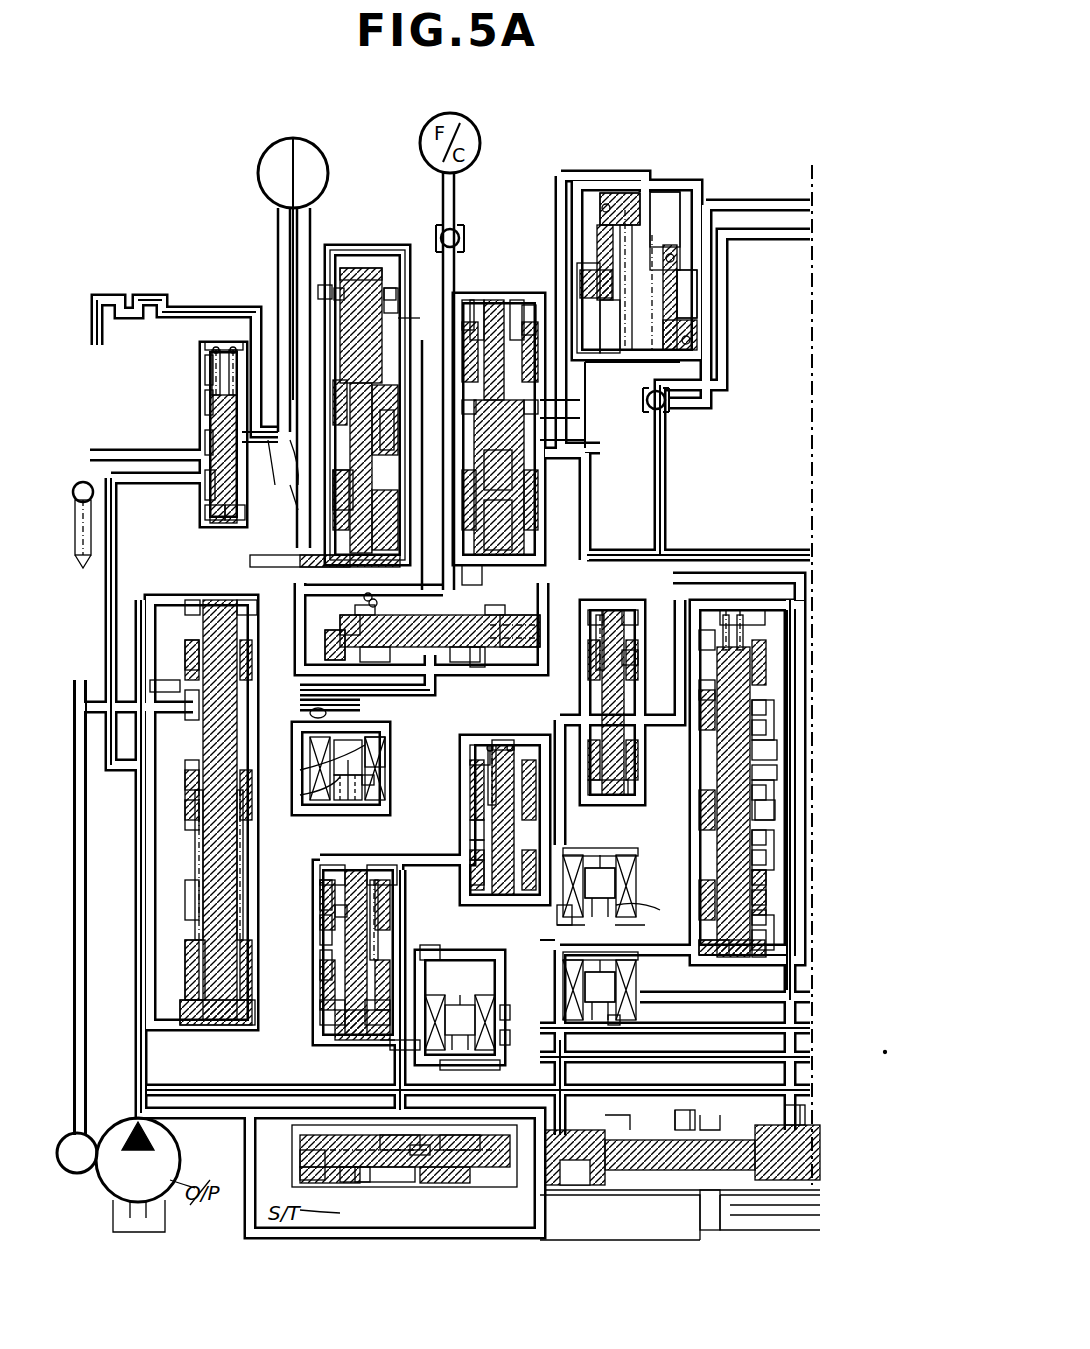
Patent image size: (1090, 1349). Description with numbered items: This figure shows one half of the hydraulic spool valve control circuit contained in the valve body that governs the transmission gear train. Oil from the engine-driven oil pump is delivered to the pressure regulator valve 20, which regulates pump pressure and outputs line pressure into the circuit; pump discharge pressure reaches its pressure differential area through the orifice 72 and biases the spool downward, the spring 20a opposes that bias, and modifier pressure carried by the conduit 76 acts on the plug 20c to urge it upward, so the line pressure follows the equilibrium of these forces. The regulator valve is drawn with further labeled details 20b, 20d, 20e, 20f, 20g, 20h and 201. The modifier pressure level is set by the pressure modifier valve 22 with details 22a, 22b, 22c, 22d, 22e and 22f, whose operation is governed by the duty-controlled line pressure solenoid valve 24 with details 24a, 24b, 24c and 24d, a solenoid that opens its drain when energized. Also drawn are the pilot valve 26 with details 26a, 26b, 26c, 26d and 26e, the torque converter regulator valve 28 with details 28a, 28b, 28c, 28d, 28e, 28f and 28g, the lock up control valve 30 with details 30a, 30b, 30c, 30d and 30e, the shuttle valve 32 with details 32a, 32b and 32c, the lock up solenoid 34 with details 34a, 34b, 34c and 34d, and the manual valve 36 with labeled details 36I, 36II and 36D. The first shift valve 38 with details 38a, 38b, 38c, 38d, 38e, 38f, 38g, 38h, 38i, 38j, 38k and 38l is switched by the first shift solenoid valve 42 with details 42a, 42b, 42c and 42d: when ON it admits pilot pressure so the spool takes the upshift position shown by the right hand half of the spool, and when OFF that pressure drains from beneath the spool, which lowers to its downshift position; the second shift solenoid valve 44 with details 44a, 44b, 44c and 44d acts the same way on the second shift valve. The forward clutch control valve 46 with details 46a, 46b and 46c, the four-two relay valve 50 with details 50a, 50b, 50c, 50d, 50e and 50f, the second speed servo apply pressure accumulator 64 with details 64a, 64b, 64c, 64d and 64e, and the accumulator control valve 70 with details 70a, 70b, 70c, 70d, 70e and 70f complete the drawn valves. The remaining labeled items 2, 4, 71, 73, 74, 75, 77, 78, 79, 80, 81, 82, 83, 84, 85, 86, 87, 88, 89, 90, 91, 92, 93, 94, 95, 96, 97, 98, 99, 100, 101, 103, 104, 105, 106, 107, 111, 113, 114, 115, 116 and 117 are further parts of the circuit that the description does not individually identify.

The engine 2 is at (328, 173).
The manual valve 4 is at (325, 350).
The pressure regulator valve 20 is at (215, 590).
The spring 20a is at (200, 905).
The port 20b is at (185, 600).
The plug 20c is at (185, 945).
The port 20d is at (255, 590).
The port 20e is at (200, 782).
The port 20f is at (185, 695).
The port 20g is at (185, 640).
The port 20h is at (195, 815).
The port 201 is at (320, 960).
The pressure modifier valve 22 is at (340, 1045).
The port 22a is at (382, 864).
The port 22b is at (332, 864).
The port 22c is at (320, 925).
The port 22d is at (330, 1025).
The port 22e is at (320, 888).
The port 22f is at (380, 1025).
The line pressure solenoid valve 24 is at (490, 975).
The port 24a is at (515, 1045).
The port 24b is at (385, 1050).
The port 24c is at (500, 1010).
The port 24d is at (490, 1065).
The pilot valve 26 is at (400, 1190).
The port 26a is at (455, 1135).
The port 26b is at (420, 1145).
The port 26c is at (300, 1170).
The port 26d is at (400, 1135).
The port 26e is at (355, 1183).
The torque converter regulator valve 28 is at (200, 500).
The port 28a is at (210, 342).
The port 28b is at (205, 362).
The port 28c is at (205, 440).
The port 28d is at (205, 485).
The port 28e is at (205, 398).
The port 28f is at (210, 517).
The port 28g is at (245, 517).
The lock up control valve 30 is at (355, 262).
The port 30a is at (258, 560).
The port 30b is at (400, 300).
The port 30c is at (330, 475).
The port 30d is at (320, 560).
The port 30e is at (362, 268).
The shuttle valve 32 is at (480, 600).
The port 32a is at (520, 665).
The port 32b is at (340, 620).
The port 32c is at (325, 638).
The lock up solenoid 34 is at (330, 820).
The port 34a is at (385, 755).
The port 34b is at (345, 805).
The port 34c is at (300, 770).
The port 34d is at (300, 797).
The manual valve 36 is at (665, 1228).
The port 36I is at (675, 1120).
The port 36II is at (705, 1215).
The port 36D is at (795, 1105).
The first shift valve 38 is at (740, 955).
The port 38a is at (738, 608).
The port 38b is at (699, 642).
The port 38c is at (766, 917).
The port 38d is at (699, 690).
The port 38e is at (766, 708).
The port 38f is at (766, 792).
The port 38g is at (766, 857).
The port 38h is at (766, 937).
The port 38i is at (766, 952).
The port 38j is at (790, 660).
The port 38k is at (766, 728).
The port 38l is at (766, 837).
The first shift solenoid valve 42 is at (612, 835).
The port 42a is at (590, 848).
The solenoid 42b is at (598, 879).
The port 42c is at (557, 922).
The port 42d is at (660, 910).
The second shift solenoid valve 44 is at (630, 1030).
The port 44a is at (565, 960).
The solenoid 44b is at (598, 983).
The port 44c is at (780, 1030).
The port 44d is at (620, 1020).
The forward clutch control valve 46 is at (490, 290).
The port 46a is at (500, 525).
The port 46b is at (530, 320).
The port 46c is at (500, 480).
The 4-2 relay valve 50 is at (612, 600).
The port 50a is at (590, 615).
The port 50b is at (638, 615).
The port 50c is at (777, 752).
The port 50d is at (777, 772).
The port 50e is at (600, 795).
The port 50f is at (638, 660).
The second speed servo apply pressure accumulator 64 is at (672, 178).
The piston 64a is at (618, 190).
The chamber 64b is at (622, 336).
The spring 64c is at (690, 300).
The chamber 64d is at (672, 210).
The chamber 64e is at (585, 300).
The accumulator control valve 70 is at (532, 876).
The port 70a is at (500, 740).
The port 70b is at (475, 745).
The port 70c is at (470, 870).
The port 70d is at (470, 828).
The port 70e is at (470, 848).
The port 70f is at (775, 810).
The passage 71 is at (130, 897).
The orifice 72 is at (170, 680).
The passage 73 is at (82, 678).
The passage 74 is at (135, 918).
The oil pump 75 is at (110, 1140).
The conduit 76 is at (260, 1035).
The passage 77 is at (260, 1075).
The passage 78 is at (375, 785).
The passage 79 is at (275, 840).
The passage 80 is at (440, 955).
The passage 81 is at (430, 925).
The relief valve 82 is at (78, 480).
The passage 83 is at (290, 500).
The passage 84 is at (98, 640).
The passage 85 is at (242, 436).
The passage 86 is at (290, 482).
The passage 87 is at (268, 480).
The passage 88 is at (222, 305).
The passage 89 is at (162, 290).
The passage 90 is at (97, 290).
The passage 91 is at (278, 238).
The passage 92 is at (325, 283).
The passage 93 is at (310, 215).
The passage 94 is at (398, 322).
The orifice 95 is at (363, 603).
The passage 96 is at (468, 590).
The passage 97 is at (300, 685).
The passage 98 is at (318, 712).
The passage 99 is at (540, 940).
The passage 100 is at (699, 950).
The passage 101 is at (595, 1050).
The passage 103 is at (468, 310).
The passage 104 is at (580, 418).
The passage 105 is at (580, 400).
The passage 106 is at (585, 440).
The check valve 107 is at (462, 232).
The passage 111 is at (685, 560).
The passage 113 is at (730, 360).
The check valve 114 is at (675, 400).
The passage 115 is at (490, 690).
The passage 116 is at (766, 897).
The passage 117 is at (766, 877).